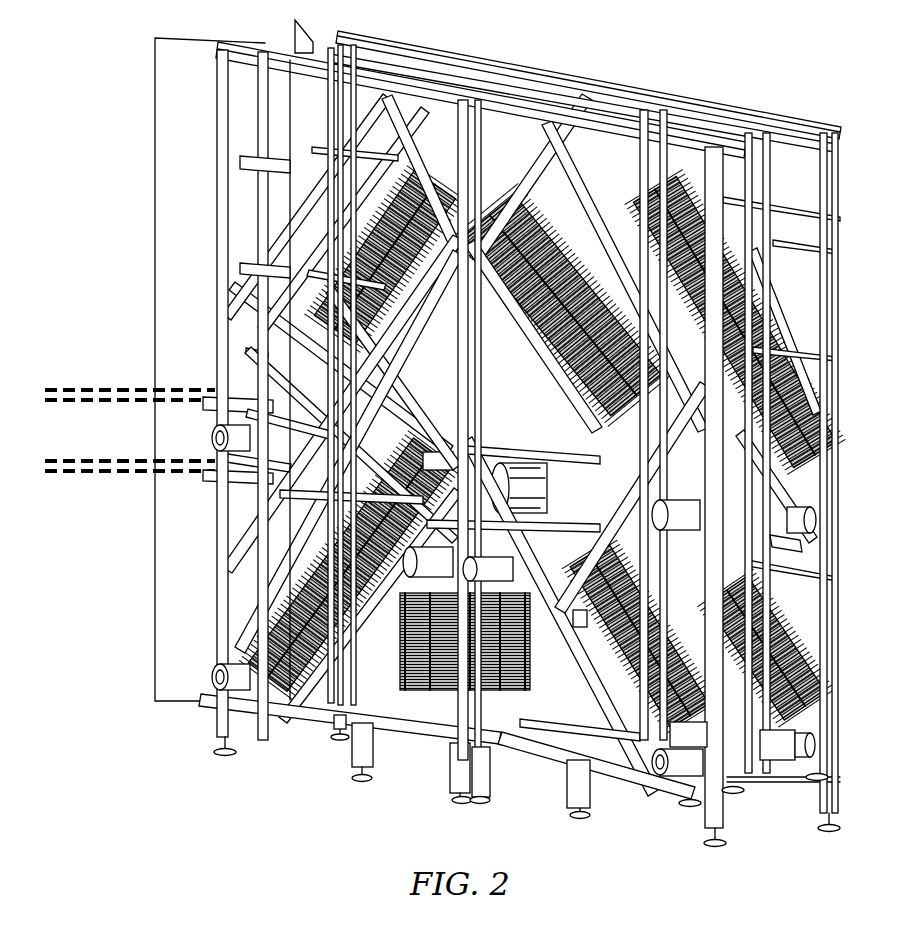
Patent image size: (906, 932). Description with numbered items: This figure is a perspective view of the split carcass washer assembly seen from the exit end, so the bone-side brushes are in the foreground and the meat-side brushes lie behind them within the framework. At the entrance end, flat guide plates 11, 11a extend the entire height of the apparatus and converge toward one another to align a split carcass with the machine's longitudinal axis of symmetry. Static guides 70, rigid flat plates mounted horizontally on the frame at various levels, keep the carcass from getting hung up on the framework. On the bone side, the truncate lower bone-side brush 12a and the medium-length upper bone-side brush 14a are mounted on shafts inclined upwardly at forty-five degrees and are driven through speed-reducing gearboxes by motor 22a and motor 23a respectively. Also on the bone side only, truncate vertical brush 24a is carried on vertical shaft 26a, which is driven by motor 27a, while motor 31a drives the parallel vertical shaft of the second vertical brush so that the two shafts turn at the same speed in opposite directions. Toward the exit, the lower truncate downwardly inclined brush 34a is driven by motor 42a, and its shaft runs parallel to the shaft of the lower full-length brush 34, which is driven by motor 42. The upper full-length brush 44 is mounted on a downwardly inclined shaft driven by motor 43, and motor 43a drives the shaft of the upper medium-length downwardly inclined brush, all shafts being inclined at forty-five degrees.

The flat guide plate 11 is at (193, 121).
The flat guide plate 11a is at (295, 36).
The static guides 70 is at (250, 160).
The upper bone-side brush 14a is at (258, 352).
The motor 23a is at (218, 438).
The lower bone-side brush 12a is at (242, 631).
The motor 22a is at (218, 677).
The motor 27a is at (340, 742).
The motor 31a is at (355, 762).
The truncate vertical brush 24a is at (433, 680).
The vertical shaft 26a is at (500, 740).
The motor 42a is at (660, 777).
The lower truncate downwardly inclined brush 34a is at (650, 621).
The lower full-length brush 34 is at (800, 682).
The motor 42 is at (808, 772).
The upper full-length brush 44 is at (820, 437).
The motor 43 is at (723, 510).
The motor 43a is at (800, 545).